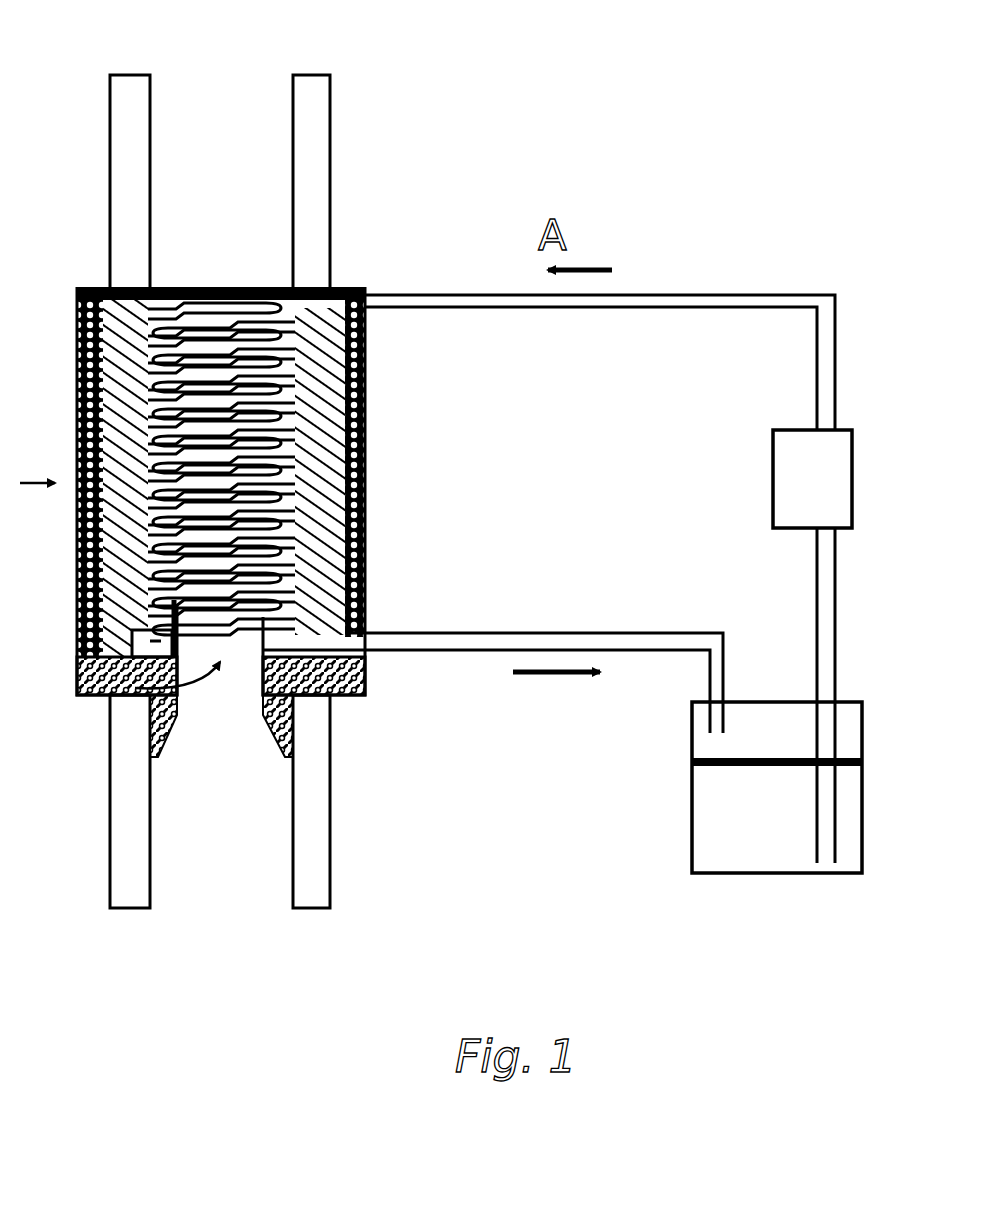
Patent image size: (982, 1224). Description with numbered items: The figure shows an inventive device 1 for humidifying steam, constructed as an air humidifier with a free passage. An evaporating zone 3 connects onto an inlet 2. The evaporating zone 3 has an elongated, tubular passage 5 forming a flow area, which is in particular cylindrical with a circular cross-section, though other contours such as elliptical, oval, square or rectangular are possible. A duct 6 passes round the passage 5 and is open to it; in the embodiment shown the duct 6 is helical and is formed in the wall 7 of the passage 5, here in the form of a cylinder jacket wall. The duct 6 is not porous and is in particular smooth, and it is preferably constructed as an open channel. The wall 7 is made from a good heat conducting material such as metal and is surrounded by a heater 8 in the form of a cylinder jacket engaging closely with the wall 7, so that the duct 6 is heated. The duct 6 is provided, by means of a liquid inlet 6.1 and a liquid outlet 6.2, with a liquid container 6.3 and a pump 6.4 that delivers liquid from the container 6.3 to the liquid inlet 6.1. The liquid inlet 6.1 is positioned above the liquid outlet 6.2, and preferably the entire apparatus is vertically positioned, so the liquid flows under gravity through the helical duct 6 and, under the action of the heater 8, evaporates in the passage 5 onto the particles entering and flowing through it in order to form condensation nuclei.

The device for humidifying steam 1 is at (189, 544).
The inlet 2 is at (198, 68).
The evaporating zone 3 is at (189, 455).
The tubular passage 5 is at (77, 673).
The duct 6 is at (77, 408).
The wall 7 is at (78, 513).
The heater 8 is at (78, 580).
The liquid inlet 6.1 is at (375, 297).
The liquid outlet 6.2 is at (382, 643).
The liquid container 6.3 is at (738, 862).
The pump 6.4 is at (843, 482).